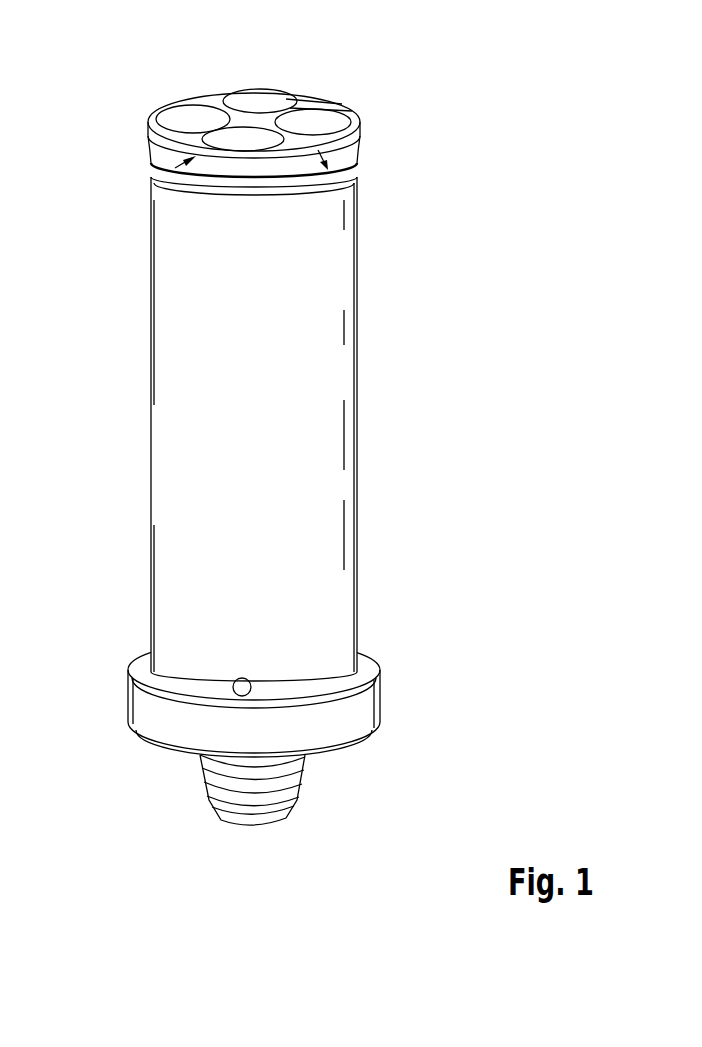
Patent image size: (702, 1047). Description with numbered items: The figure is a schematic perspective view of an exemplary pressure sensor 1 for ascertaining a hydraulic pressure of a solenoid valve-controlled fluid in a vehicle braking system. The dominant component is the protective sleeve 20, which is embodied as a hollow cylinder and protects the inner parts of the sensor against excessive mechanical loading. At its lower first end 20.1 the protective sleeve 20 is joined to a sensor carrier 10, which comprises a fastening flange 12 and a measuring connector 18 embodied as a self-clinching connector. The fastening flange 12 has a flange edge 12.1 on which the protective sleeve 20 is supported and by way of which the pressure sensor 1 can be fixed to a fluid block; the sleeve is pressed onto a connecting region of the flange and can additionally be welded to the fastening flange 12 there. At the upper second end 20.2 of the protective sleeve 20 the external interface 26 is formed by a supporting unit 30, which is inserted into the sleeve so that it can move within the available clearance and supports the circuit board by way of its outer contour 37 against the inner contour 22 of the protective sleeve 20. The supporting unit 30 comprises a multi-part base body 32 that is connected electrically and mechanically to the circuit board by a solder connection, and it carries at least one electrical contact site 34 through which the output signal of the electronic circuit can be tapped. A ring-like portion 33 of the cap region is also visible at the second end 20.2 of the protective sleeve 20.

The pressure sensor 1 is at (77, 66).
The sensor carrier 10 is at (412, 754).
The fastening flange 12 is at (368, 695).
The flange edge 12.1 is at (142, 670).
The measuring connector 18 is at (302, 796).
The protective sleeve 20 is at (177, 252).
The first end of the protective sleeve 20.1 is at (387, 618).
The second end of the protective sleeve 20.2 is at (389, 193).
The inner contour of the protective sleeve 22 is at (350, 142).
The external interface 26 is at (314, 68).
The supporting unit 30 is at (157, 78).
The base body 32 is at (218, 100).
The cap ring 33 is at (150, 136).
The contact site 34 is at (180, 118).
The outer contour of the supporting unit 37 is at (185, 166).